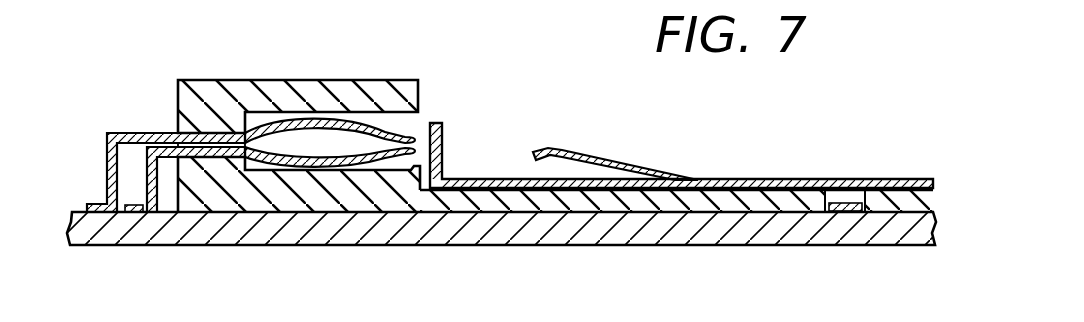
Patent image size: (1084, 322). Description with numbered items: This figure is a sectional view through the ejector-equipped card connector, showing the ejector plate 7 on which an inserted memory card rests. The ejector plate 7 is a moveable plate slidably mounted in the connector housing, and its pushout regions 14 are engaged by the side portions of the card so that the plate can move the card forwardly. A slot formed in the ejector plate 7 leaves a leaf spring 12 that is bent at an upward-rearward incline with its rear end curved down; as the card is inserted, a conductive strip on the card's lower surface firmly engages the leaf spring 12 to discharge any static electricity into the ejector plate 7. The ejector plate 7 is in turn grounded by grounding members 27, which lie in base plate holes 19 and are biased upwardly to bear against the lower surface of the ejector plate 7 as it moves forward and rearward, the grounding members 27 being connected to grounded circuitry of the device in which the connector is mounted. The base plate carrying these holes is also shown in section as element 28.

The ejector plate 7 is at (858, 186).
The leaf spring 12 is at (594, 153).
The pushout region 14 is at (443, 149).
The base plate hole 19 is at (828, 208).
The grounding member 27 is at (795, 186).
The base plate 28 is at (522, 233).